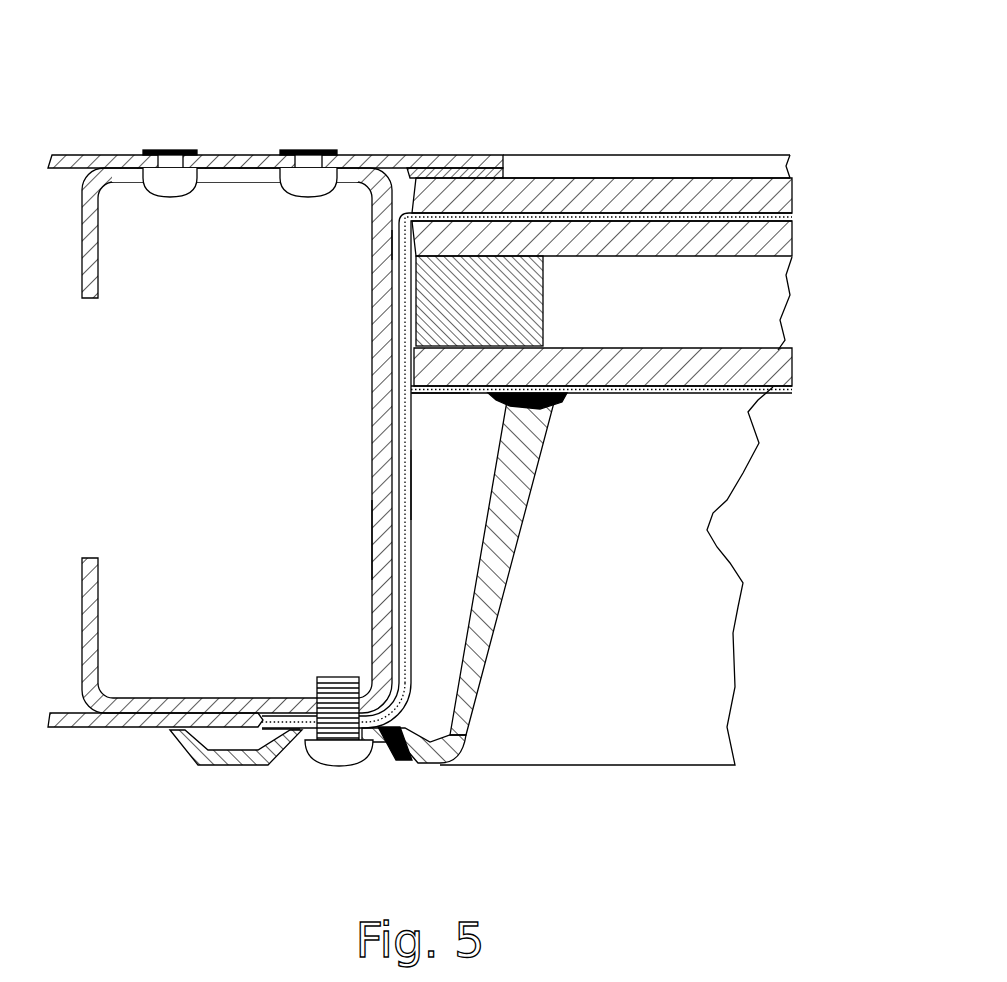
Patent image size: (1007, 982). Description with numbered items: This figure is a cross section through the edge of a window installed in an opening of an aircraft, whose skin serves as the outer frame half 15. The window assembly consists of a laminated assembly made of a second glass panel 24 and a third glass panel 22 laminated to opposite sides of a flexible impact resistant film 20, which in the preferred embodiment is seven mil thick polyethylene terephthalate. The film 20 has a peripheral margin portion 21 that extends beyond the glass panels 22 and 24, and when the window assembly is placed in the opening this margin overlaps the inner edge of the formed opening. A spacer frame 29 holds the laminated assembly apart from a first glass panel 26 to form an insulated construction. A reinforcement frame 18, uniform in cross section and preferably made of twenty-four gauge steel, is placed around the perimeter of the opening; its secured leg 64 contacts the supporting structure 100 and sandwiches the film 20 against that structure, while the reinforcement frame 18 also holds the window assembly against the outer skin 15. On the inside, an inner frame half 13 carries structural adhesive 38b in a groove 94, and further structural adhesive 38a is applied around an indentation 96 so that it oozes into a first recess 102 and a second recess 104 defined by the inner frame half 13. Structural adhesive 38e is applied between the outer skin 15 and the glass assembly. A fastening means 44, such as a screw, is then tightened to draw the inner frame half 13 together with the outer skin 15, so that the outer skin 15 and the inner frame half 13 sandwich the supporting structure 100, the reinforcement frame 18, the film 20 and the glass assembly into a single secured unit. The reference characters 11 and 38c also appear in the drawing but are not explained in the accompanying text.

The base plate 11 is at (85, 728).
The inner frame half 13 is at (500, 640).
The outer frame half 15 is at (355, 157).
The reinforcement frame 18 is at (411, 487).
The flexible impact resistant film 20 is at (806, 218).
The peripheral margin portion 21 is at (386, 242).
The third glass panel 22 is at (787, 172).
The second glass panel 24 is at (752, 260).
The first glass panel 26 is at (795, 365).
The spacer frame 29 is at (808, 238).
The structural adhesive 38a is at (273, 733).
The structural adhesive 38b is at (572, 400).
The seal strip 38c is at (503, 170).
The structural adhesive 38e is at (400, 162).
The fastening means 44 is at (335, 767).
The secured leg 64 is at (440, 395).
The groove 94 is at (533, 400).
The indentation 96 is at (300, 743).
The supporting structure 100 is at (373, 545).
The first recess 102 is at (187, 745).
The second recess 104 is at (437, 738).